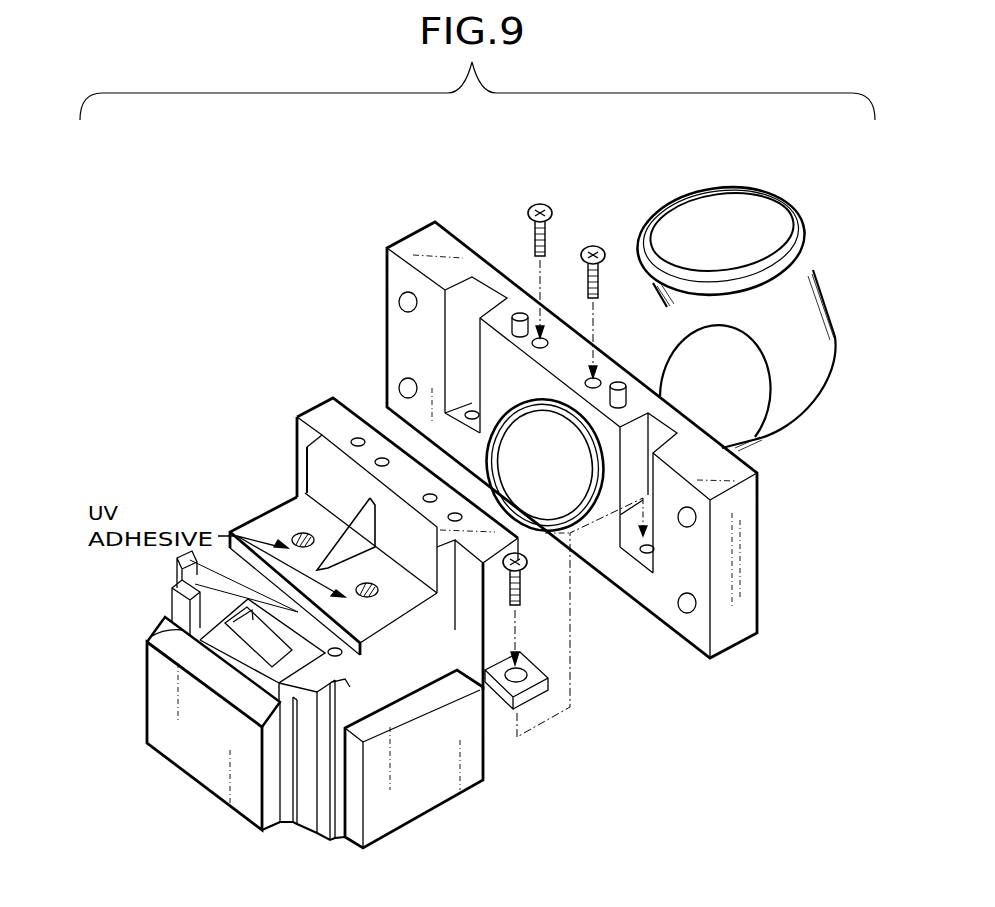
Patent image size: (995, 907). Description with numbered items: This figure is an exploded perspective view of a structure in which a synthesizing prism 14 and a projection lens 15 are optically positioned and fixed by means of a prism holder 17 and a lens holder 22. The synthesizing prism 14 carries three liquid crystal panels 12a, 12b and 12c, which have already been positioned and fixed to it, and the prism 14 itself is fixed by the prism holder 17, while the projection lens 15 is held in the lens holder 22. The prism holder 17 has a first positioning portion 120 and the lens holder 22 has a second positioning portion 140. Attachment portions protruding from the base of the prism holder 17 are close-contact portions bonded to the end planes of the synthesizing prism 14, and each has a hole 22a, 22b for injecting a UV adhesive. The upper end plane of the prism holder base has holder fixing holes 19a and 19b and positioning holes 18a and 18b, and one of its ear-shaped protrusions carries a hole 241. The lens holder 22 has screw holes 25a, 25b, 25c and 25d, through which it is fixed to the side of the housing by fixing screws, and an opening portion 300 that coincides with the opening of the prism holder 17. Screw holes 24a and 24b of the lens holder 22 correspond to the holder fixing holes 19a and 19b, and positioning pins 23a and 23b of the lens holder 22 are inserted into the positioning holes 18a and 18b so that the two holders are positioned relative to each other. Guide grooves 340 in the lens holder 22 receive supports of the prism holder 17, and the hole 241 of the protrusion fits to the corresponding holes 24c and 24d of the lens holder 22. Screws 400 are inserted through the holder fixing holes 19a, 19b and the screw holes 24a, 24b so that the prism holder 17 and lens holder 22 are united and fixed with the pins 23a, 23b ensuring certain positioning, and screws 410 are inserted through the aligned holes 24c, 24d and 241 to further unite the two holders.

The liquid crystal panel 12a is at (178, 560).
The liquid crystal panel 12b is at (197, 785).
The liquid crystal panel 12c is at (410, 803).
The synthesizing prism 14 is at (325, 818).
The projection lens 15 is at (822, 293).
The prism holder 17 is at (300, 414).
The positioning hole 18a is at (352, 441).
The positioning hole 18b is at (448, 522).
The holder fixing hole 19a is at (376, 462).
The holder fixing hole 19b is at (424, 497).
The lens holder 22 is at (387, 246).
The hole for injecting UV adhesive 22a is at (292, 540).
The hole for injecting UV adhesive 22b is at (375, 595).
The positioning pin 23a is at (520, 312).
The positioning pin 23b is at (620, 384).
The screw hole 24a is at (542, 336).
The screw hole 24b is at (594, 377).
The hole 24c is at (466, 412).
The hole 24d is at (650, 552).
The screw hole 25a is at (400, 302).
The screw hole 25b is at (684, 525).
The screw hole 25c is at (400, 388).
The screw hole 25d is at (684, 612).
The first positioning portion 120 is at (327, 480).
The second positioning portion 140 is at (668, 400).
The hole 241 is at (530, 672).
The opening portion 300 is at (517, 434).
The guide groove 340 is at (470, 345).
The screw 400 is at (540, 203).
The screw 410 is at (522, 585).